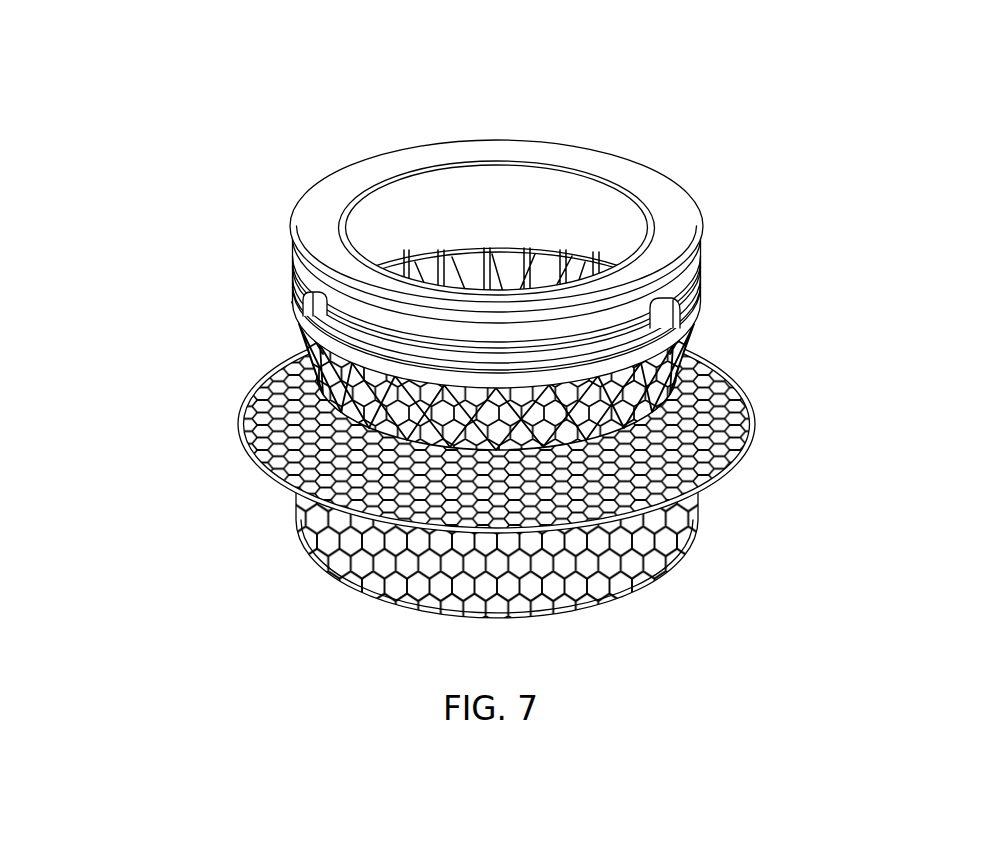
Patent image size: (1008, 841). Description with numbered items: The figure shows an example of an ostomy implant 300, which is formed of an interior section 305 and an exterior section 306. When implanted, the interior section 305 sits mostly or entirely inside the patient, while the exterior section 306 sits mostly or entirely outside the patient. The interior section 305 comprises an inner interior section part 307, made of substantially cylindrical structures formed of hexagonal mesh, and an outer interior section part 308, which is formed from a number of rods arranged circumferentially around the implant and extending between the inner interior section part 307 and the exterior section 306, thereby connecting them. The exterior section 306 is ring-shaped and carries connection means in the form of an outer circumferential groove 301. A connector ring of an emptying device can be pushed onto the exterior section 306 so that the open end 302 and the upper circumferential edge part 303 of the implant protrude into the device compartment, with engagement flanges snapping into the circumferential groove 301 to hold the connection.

The ostomy implant 300 is at (257, 136).
The circumferential groove 301 is at (345, 300).
The open end 302 is at (490, 205).
The upper circumferential edge part 303 is at (659, 192).
The interior section 305 is at (202, 410).
The exterior section 306 is at (252, 254).
The inner interior section part 307 is at (271, 504).
The outer interior section part 308 is at (694, 352).